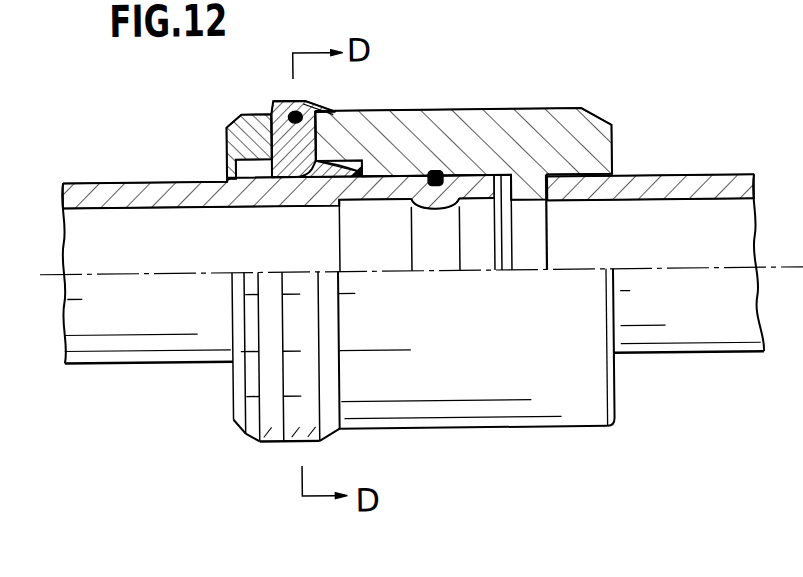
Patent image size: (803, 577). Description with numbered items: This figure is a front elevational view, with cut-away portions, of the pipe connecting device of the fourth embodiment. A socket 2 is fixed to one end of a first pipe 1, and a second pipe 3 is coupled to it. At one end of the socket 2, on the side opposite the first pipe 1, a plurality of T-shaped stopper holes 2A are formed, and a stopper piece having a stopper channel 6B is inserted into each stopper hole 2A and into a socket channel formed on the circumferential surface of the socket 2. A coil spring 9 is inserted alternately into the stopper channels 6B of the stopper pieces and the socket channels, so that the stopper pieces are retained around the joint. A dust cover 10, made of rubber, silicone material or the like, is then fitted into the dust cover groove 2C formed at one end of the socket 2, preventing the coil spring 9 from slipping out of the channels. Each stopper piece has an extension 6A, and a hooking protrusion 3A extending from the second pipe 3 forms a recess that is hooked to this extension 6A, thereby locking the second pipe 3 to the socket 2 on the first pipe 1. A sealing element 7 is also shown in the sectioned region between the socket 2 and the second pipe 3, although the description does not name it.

The first pipe 1 is at (702, 337).
The socket 2 is at (600, 140).
The stopper hole 2A is at (338, 108).
The dust cover groove 2C is at (268, 110).
The second pipe 3 is at (137, 342).
The hooking protrusion 3A is at (368, 158).
The extension 6A is at (322, 120).
The stopper channel 6B is at (262, 115).
The sealing ring 7 is at (438, 172).
The coil spring 9 is at (312, 96).
The dust cover 10 is at (283, 100).